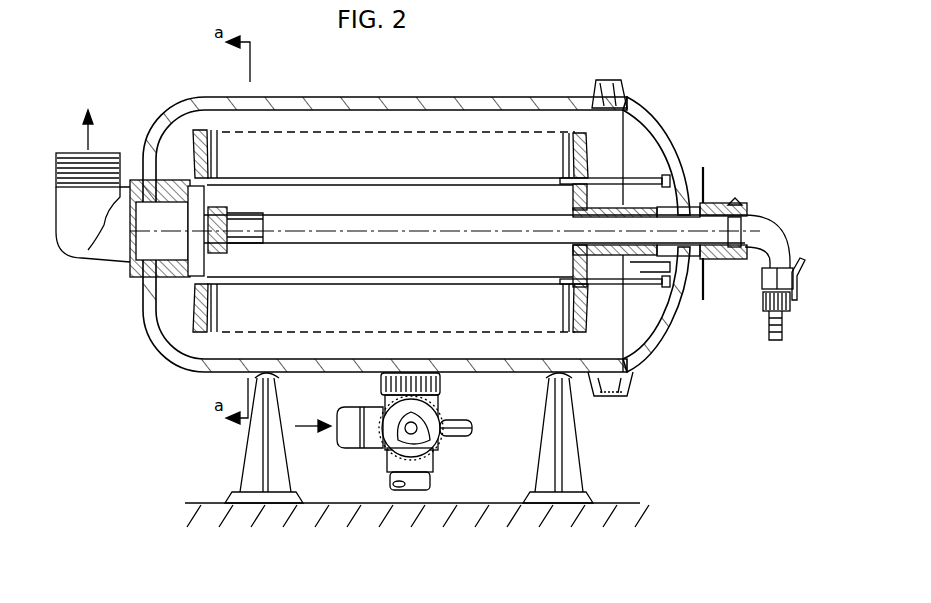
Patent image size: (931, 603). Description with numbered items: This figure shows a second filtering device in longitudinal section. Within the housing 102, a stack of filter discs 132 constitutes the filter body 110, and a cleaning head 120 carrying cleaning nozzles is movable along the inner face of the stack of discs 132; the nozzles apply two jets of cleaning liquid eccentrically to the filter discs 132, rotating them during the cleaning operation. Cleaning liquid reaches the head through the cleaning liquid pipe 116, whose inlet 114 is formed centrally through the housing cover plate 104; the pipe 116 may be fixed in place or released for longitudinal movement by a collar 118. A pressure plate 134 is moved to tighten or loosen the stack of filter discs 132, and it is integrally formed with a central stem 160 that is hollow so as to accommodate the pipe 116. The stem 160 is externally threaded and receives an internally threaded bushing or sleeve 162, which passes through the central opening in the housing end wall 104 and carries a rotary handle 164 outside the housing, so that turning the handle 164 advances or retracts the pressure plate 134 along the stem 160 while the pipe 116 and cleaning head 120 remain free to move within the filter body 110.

The housing 102 is at (481, 95).
The housing cover plate 104 is at (646, 362).
The filter body 110 is at (528, 123).
The inlet 114 is at (709, 207).
The cleaning liquid pipe 116 is at (412, 215).
The collar 118 is at (734, 262).
The head 120 is at (228, 187).
The filter discs 132 is at (561, 135).
The pressure plate 134 is at (580, 137).
The central stem 160 is at (571, 202).
The sleeve 162 is at (652, 187).
The rotary handle 164 is at (711, 152).